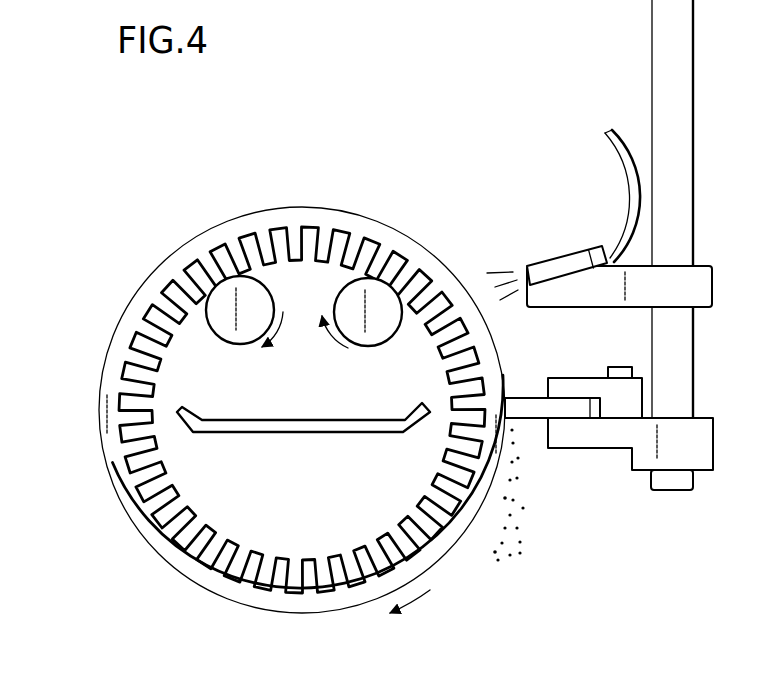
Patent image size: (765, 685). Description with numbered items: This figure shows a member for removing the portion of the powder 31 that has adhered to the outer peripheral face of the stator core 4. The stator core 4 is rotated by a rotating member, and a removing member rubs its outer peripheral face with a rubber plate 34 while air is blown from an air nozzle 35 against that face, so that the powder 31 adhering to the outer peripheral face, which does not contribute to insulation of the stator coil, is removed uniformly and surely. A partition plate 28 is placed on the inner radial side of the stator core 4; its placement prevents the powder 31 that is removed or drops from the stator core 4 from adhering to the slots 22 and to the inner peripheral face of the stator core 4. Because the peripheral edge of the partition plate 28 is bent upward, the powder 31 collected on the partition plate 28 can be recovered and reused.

The stator core 4 is at (295, 220).
The slots 22 is at (297, 575).
The partition plate 28 is at (180, 408).
The powder 31 is at (517, 528).
The rubber plate 34 is at (530, 408).
The air nozzle 35 is at (570, 263).